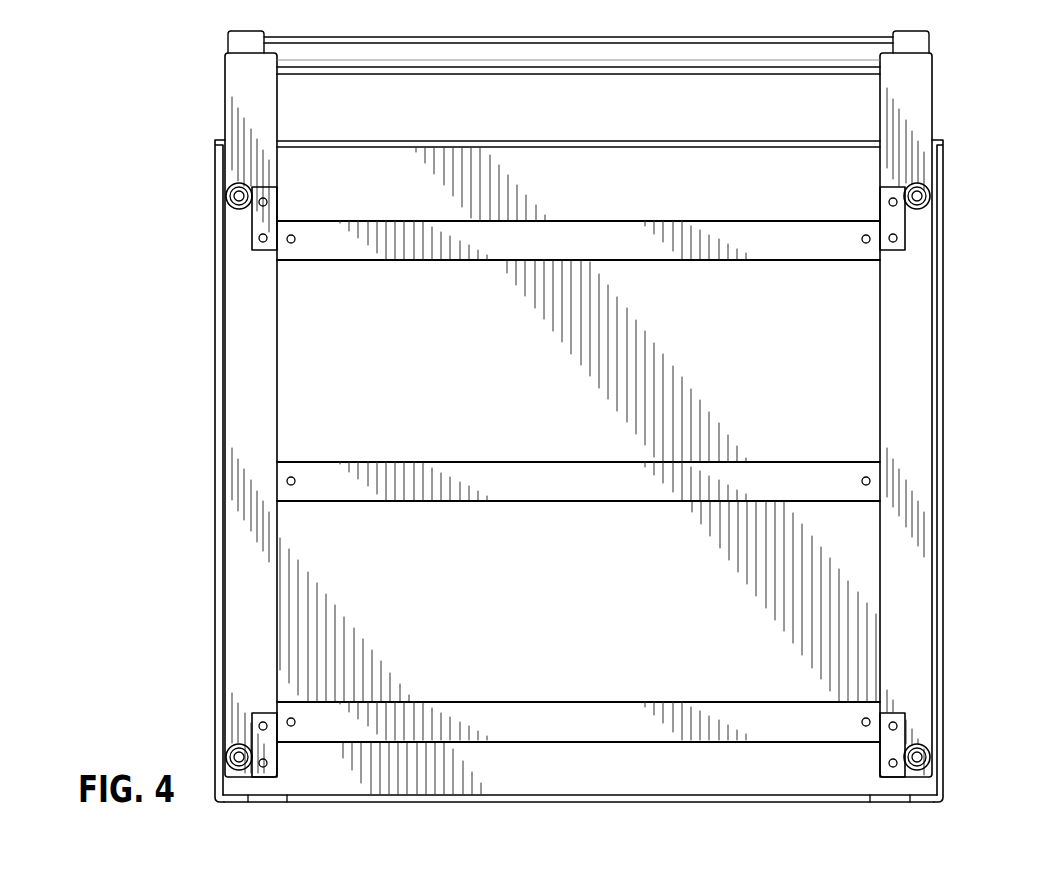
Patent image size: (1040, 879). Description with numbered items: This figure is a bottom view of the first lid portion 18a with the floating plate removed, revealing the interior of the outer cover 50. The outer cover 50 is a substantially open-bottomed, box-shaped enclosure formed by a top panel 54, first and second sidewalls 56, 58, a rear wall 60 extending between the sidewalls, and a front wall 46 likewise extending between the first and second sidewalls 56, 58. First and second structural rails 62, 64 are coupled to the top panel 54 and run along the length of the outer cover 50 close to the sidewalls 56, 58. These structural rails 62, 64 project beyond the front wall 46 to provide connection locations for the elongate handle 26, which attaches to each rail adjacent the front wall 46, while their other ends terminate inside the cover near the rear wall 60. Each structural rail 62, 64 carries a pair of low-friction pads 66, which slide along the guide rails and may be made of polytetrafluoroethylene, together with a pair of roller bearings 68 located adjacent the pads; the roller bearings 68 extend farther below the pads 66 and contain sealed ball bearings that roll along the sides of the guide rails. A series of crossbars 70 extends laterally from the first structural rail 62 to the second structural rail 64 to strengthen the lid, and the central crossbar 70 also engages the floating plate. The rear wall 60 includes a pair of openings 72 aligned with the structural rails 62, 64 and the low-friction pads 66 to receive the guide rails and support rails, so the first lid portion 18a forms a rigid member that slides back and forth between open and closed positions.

The first lid portion 18a is at (957, 127).
The elongate handle 26 is at (467, 52).
The front wall 46 is at (527, 140).
The outer cover 50 is at (762, 143).
The top panel 54 is at (459, 370).
The first sidewall 56 is at (220, 378).
The second sidewall 58 is at (945, 365).
The rear wall 60 is at (940, 800).
The first structural rail 62 is at (245, 589).
The second structural rail 64 is at (910, 625).
The low-friction pads 66 is at (258, 235).
The roller bearings 68 is at (226, 190).
The crossbars 70 is at (632, 259).
The openings 72 is at (278, 797).